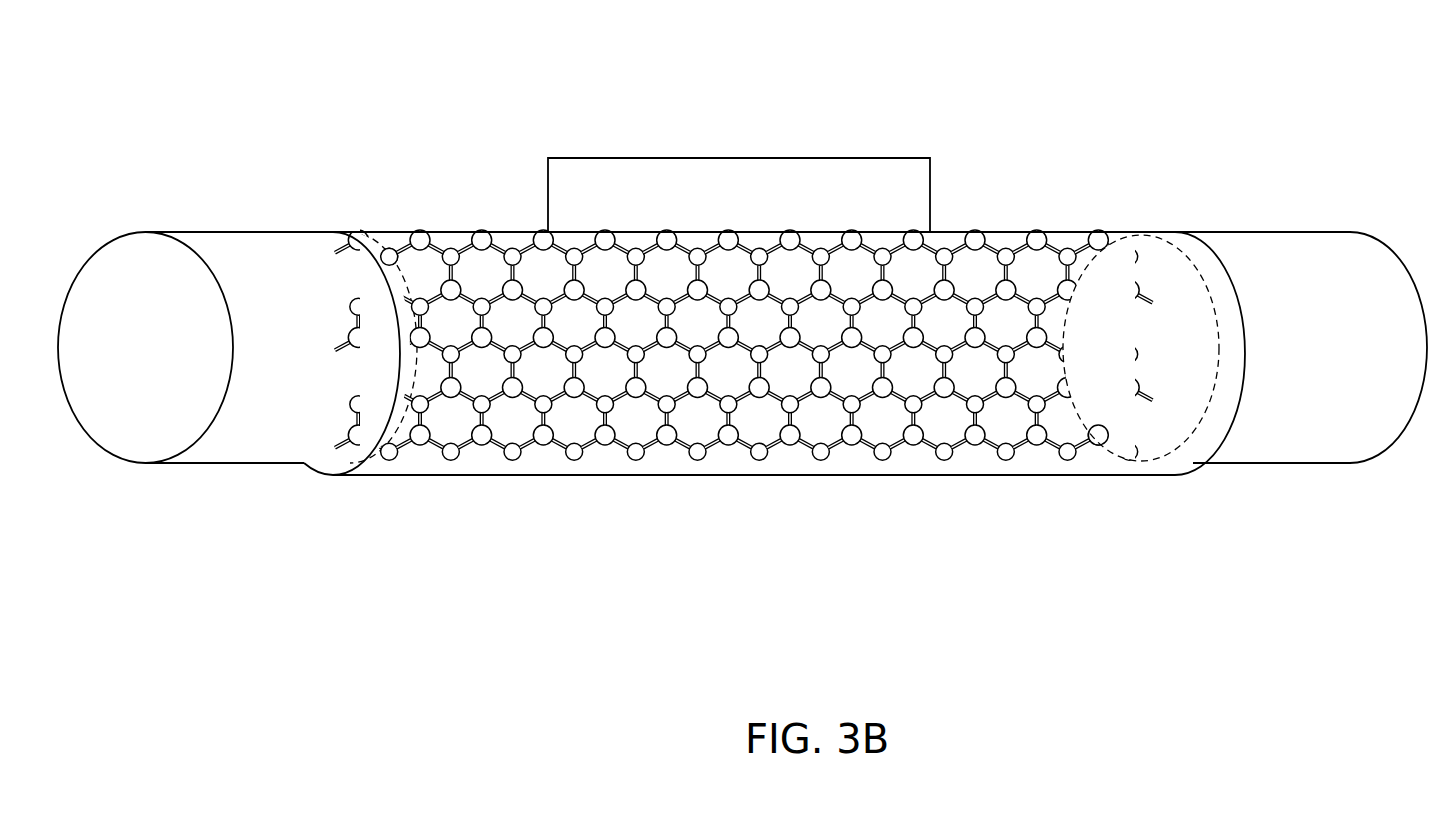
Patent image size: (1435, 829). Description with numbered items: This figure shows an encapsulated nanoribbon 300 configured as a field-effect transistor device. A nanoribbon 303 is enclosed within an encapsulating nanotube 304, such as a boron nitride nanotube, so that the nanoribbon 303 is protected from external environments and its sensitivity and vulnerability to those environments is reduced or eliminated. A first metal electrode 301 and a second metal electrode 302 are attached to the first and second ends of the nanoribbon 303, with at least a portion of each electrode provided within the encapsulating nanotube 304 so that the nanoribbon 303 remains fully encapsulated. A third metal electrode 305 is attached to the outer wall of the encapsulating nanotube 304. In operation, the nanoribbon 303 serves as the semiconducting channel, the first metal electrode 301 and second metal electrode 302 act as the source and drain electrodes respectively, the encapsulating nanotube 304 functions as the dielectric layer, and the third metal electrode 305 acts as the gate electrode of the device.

The encapsulated nanoribbon 300 is at (923, 130).
The first metal electrode 301 is at (157, 245).
The second metal electrode 302 is at (1335, 267).
The nanoribbon 303 is at (503, 250).
The encapsulating nanotube 304 is at (1073, 232).
The third metal electrode 305 is at (668, 172).